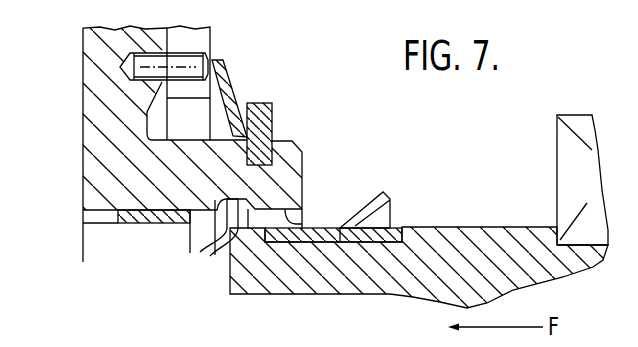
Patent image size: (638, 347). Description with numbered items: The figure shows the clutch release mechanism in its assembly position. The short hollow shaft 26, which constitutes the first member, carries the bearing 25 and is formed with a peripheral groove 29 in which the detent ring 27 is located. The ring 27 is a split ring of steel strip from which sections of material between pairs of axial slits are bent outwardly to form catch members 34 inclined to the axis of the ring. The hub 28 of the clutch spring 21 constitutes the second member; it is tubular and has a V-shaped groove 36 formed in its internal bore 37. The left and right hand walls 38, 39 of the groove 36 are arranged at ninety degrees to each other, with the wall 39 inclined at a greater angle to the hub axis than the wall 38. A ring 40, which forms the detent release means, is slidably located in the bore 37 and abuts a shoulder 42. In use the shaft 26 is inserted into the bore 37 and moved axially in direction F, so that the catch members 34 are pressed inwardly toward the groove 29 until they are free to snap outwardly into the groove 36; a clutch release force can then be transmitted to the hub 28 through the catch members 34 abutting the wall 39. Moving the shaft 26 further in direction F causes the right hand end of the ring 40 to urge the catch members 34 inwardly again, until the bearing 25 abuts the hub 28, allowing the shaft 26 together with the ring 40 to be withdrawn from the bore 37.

The clutch spring 21 is at (197, 40).
The bearing 25 is at (558, 152).
The short hollow shaft 26 is at (487, 243).
The detent ring 27 is at (306, 249).
The hub 28 is at (74, 110).
The peripheral groove 29 is at (385, 226).
The catch members 34 is at (358, 236).
The V-shaped groove 36 is at (203, 244).
The internal bore 37 is at (297, 219).
The left hand wall 38 is at (140, 223).
The right hand wall 39 is at (221, 238).
The ring 40 is at (120, 223).
The shoulder 42 is at (118, 213).